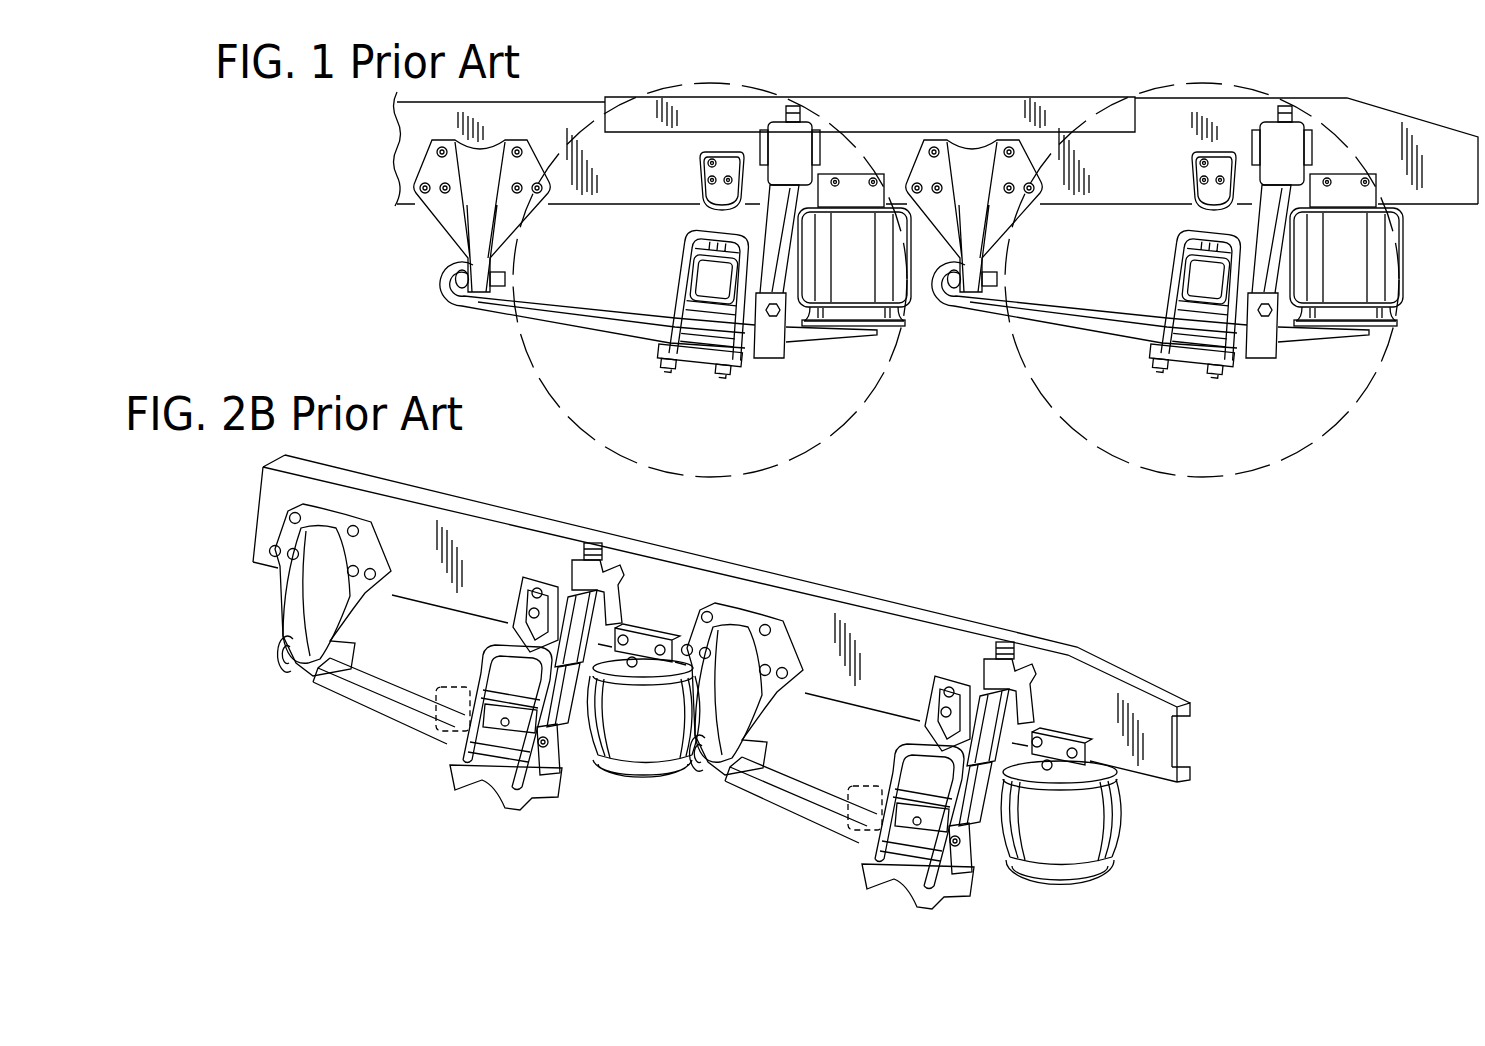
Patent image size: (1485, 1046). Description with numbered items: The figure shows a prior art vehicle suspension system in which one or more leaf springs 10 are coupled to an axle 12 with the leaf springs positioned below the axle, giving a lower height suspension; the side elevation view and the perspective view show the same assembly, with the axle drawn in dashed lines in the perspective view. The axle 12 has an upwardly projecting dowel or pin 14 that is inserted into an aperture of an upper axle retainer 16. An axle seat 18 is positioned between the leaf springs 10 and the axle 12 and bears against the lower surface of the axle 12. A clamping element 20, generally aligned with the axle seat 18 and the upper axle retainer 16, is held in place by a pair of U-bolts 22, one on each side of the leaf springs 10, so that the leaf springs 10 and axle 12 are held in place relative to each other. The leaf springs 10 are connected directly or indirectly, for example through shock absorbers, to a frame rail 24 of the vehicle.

In FIG. 1, the leaf springs 10 is at (619, 334).
In FIG. 2B, the leaf springs 10 is at (378, 710).
In FIG. 1, the axle 12 is at (690, 272).
In FIG. 2B, the axle 12 is at (450, 683).
In FIG. 1, the dowel or pin 14 is at (692, 247).
In FIG. 1, the upper axle retainer 16 is at (702, 238).
In FIG. 2B, the upper axle retainer 16 is at (480, 662).
In FIG. 1, the axle seat 18 is at (704, 314).
In FIG. 2B, the axle seat 18 is at (490, 730).
In FIG. 1, the clamping element 20 is at (702, 357).
In FIG. 2B, the clamping element 20 is at (480, 785).
In FIG. 1, the U-bolts 22 is at (673, 302).
In FIG. 2B, the U-bolts 22 is at (472, 683).
In FIG. 1, the frame rail 24 is at (553, 117).
In FIG. 2B, the frame rail 24 is at (883, 627).